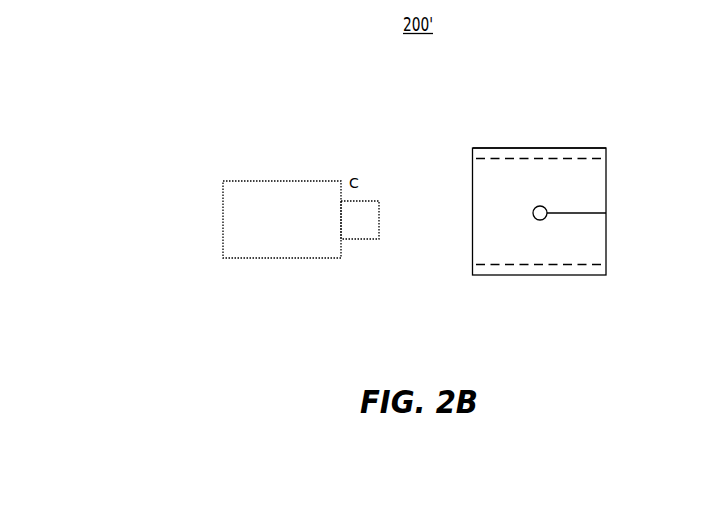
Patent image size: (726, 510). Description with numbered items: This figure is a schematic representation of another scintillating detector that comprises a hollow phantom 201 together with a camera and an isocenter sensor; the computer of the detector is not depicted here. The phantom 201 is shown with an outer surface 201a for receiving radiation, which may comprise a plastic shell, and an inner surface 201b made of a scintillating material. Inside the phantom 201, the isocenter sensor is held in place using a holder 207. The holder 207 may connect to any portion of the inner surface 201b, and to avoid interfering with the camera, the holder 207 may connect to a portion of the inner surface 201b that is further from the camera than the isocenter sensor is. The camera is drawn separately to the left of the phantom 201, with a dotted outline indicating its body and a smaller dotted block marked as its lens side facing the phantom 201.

The hollow phantom 201 is at (599, 178).
The outer surface 201a is at (514, 149).
The inner surface 201b is at (591, 159).
The holder 207 is at (598, 216).